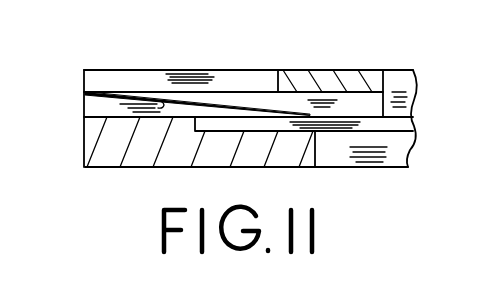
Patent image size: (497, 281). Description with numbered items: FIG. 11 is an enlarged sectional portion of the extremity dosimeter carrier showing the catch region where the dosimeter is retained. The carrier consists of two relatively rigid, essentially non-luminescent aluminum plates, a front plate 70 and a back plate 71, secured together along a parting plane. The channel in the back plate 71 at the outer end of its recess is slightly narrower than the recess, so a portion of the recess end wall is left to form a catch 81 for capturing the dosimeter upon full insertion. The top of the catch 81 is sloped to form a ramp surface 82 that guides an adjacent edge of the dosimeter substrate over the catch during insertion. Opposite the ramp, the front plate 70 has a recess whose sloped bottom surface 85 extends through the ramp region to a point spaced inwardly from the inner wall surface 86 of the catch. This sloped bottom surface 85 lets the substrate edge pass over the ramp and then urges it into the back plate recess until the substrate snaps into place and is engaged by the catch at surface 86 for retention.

The front plate 70 is at (364, 70).
The back plate 71 is at (365, 167).
The catch 81 is at (177, 112).
The ramp surface 82 is at (112, 126).
The bottom surface of the recess 85 is at (157, 104).
The inner wall surface of the catch 86 is at (198, 128).